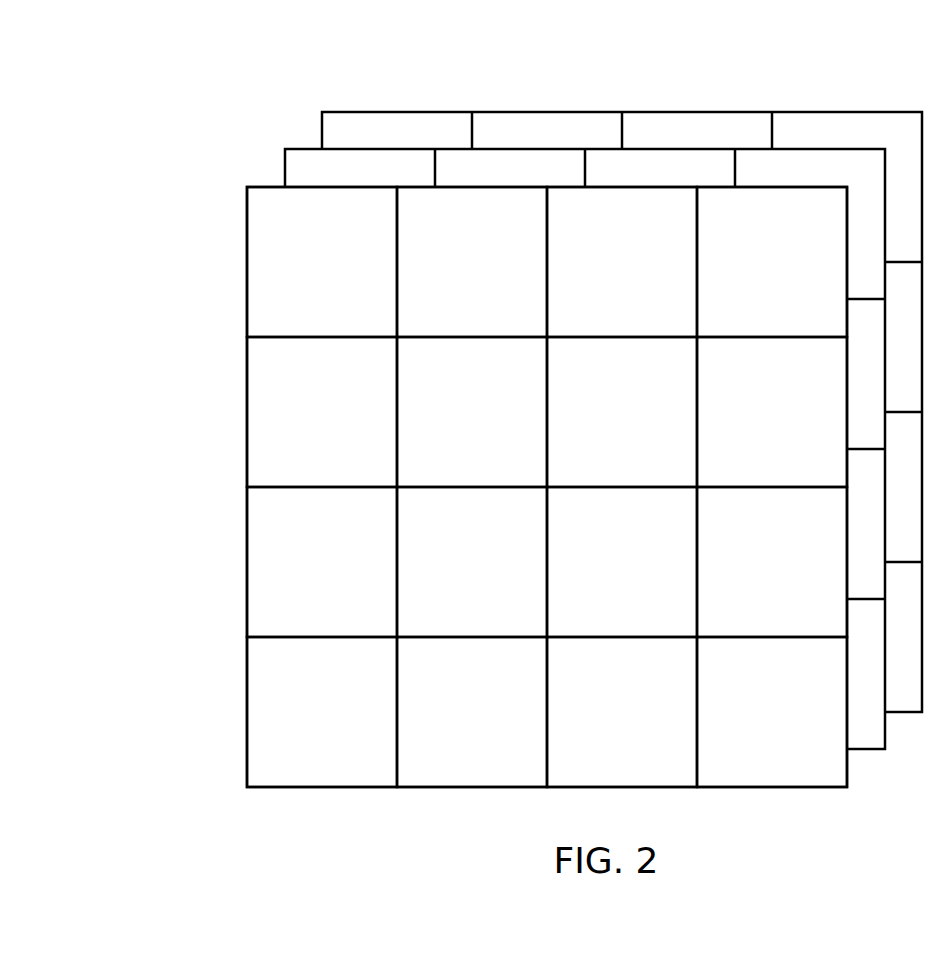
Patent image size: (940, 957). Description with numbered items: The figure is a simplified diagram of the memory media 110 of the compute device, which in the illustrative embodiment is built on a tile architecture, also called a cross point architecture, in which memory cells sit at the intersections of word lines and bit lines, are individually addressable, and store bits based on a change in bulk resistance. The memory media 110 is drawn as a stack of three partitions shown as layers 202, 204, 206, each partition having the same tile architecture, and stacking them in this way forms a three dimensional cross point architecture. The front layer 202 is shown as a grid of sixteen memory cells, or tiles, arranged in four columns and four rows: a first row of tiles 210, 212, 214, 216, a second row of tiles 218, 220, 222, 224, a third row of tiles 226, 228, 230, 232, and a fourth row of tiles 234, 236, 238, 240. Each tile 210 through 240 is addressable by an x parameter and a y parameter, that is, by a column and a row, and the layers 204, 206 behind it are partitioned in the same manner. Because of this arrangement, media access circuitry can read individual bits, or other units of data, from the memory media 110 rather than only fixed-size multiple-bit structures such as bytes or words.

The memory media 110 is at (110, 100).
The layer 202 is at (259, 187).
The layer 204 is at (301, 149).
The layer 206 is at (344, 112).
The tile 210 is at (322, 262).
The tile 212 is at (472, 262).
The tile 214 is at (622, 262).
The tile 216 is at (772, 262).
The tile 218 is at (322, 412).
The tile 220 is at (472, 412).
The tile 222 is at (622, 412).
The tile 224 is at (772, 412).
The tile 226 is at (322, 562).
The tile 228 is at (472, 562).
The tile 230 is at (622, 562).
The tile 232 is at (772, 562).
The tile 234 is at (322, 712).
The tile 236 is at (472, 712).
The tile 238 is at (622, 712).
The tile 240 is at (772, 712).